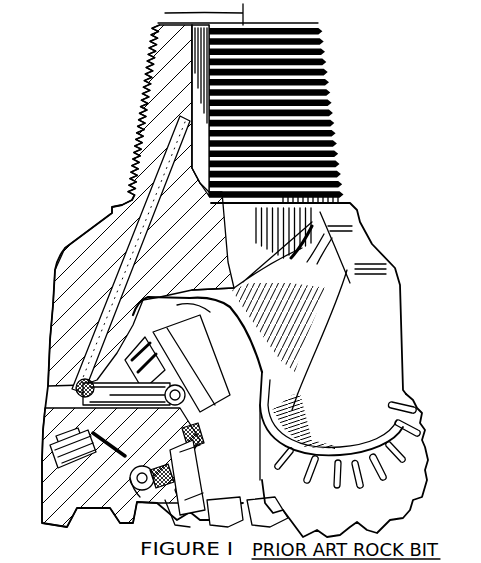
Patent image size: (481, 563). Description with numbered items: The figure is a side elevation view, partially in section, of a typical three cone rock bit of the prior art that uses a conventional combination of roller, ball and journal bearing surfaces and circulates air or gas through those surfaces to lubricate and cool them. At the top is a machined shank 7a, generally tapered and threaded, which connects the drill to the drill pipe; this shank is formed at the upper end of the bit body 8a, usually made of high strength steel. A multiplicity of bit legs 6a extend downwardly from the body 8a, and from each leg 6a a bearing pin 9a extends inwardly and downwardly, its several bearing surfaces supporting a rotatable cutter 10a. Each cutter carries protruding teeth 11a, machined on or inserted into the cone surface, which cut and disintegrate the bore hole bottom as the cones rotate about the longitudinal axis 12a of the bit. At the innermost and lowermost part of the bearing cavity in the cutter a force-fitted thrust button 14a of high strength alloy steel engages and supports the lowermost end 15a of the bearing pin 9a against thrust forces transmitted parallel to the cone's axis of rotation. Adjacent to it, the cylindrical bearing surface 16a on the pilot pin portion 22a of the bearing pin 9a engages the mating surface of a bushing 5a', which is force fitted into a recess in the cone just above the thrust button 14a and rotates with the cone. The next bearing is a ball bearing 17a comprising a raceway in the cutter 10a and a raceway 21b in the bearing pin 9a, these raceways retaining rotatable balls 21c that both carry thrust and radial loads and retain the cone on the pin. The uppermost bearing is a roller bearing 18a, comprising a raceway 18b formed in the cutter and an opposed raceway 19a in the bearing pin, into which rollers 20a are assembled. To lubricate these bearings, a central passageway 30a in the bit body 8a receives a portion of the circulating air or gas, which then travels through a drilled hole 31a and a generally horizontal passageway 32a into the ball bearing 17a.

The bushing 5a' is at (192, 512).
The bit leg 6a is at (65, 289).
The shank 7a is at (328, 100).
The bit body 8a is at (397, 285).
The bearing pin 9a is at (140, 441).
The rotatable cutter 10a is at (427, 440).
The protruding teeth 11a is at (92, 527).
The longitudinal axis of the bit 12a is at (144, 104).
The thrust button 14a is at (203, 525).
The lowermost end of the bearing pin 15a is at (168, 470).
The cylindrical bearing surface 16a is at (186, 439).
The ball bearing 17a is at (117, 486).
The roller bearing 18a is at (52, 468).
The roller bearing raceway in the cutter 18b is at (145, 330).
The roller bearing raceway in the bearing pin 19a is at (74, 448).
The rollers 20a is at (58, 440).
The ball bearing raceway in the bearing pin 21b is at (137, 473).
The rotatable balls 21c is at (186, 398).
The pilot pin portion 22a is at (200, 517).
The central passageway 30a is at (212, 136).
The drilled hole 31a is at (182, 195).
The horizontal passageway 32a is at (160, 403).